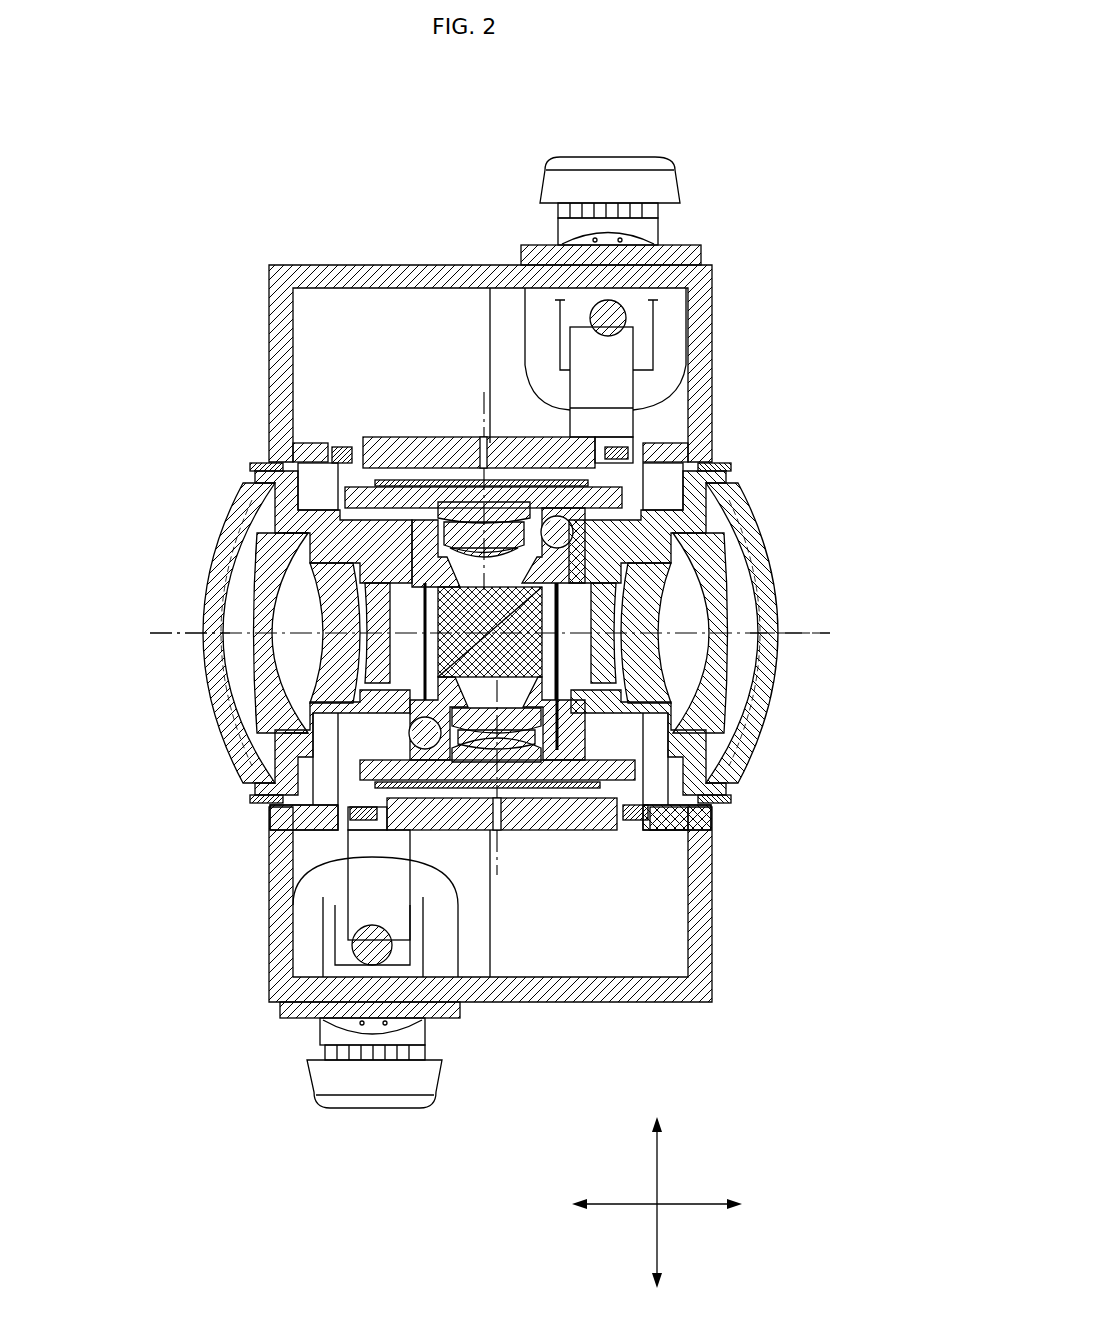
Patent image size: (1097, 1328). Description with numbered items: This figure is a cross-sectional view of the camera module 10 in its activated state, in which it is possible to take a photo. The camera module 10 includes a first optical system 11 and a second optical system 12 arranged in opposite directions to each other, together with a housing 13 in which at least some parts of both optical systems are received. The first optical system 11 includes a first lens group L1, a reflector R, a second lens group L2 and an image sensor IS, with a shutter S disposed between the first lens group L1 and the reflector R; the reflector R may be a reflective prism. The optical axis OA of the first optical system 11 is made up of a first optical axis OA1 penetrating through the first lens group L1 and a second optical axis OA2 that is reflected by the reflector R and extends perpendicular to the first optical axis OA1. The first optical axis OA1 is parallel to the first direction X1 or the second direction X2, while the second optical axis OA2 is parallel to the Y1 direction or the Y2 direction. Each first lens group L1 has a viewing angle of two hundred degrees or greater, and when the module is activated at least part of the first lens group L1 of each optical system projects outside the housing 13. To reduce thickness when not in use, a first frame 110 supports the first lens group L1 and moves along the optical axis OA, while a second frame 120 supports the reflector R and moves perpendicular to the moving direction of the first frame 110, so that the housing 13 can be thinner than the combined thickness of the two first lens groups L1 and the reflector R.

The camera module 10 is at (735, 203).
The first optical system 11 is at (218, 768).
The second optical system 12 is at (795, 755).
The housing 13 is at (703, 304).
The first frame 110 is at (272, 500).
The second frame 120 is at (330, 448).
The first lens group L1 is at (212, 558).
The second lens group L2 is at (455, 505).
The shutter S is at (292, 556).
The reflector R is at (453, 613).
The image sensor IS is at (592, 443).
The optical axis OA is at (126, 634).
The first optical axis OA1 is at (180, 640).
The second optical axis OA2 is at (484, 392).
The first direction X1 is at (598, 1204).
The second direction X2 is at (715, 1204).
The Y1 direction Y1 is at (658, 1146).
The Y2 direction Y2 is at (658, 1262).